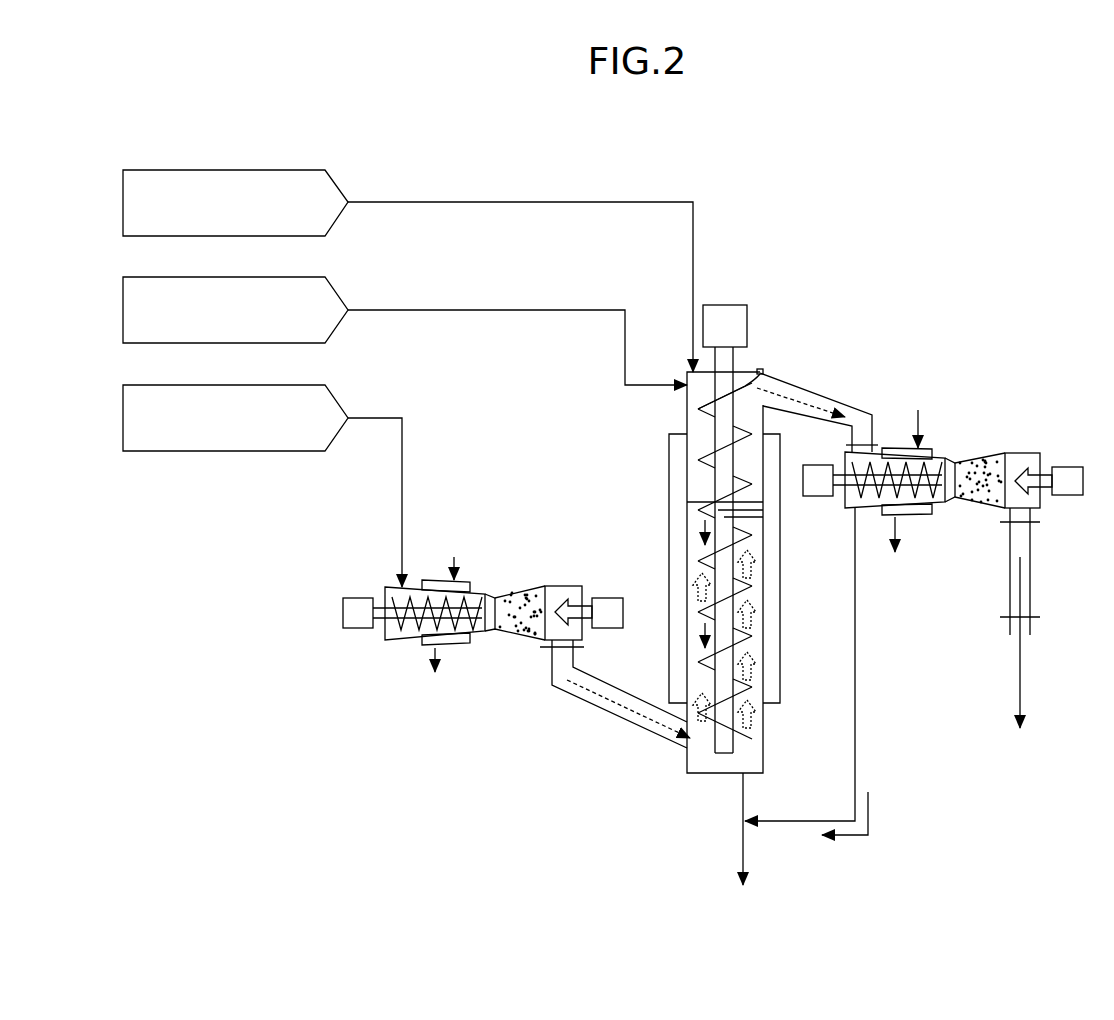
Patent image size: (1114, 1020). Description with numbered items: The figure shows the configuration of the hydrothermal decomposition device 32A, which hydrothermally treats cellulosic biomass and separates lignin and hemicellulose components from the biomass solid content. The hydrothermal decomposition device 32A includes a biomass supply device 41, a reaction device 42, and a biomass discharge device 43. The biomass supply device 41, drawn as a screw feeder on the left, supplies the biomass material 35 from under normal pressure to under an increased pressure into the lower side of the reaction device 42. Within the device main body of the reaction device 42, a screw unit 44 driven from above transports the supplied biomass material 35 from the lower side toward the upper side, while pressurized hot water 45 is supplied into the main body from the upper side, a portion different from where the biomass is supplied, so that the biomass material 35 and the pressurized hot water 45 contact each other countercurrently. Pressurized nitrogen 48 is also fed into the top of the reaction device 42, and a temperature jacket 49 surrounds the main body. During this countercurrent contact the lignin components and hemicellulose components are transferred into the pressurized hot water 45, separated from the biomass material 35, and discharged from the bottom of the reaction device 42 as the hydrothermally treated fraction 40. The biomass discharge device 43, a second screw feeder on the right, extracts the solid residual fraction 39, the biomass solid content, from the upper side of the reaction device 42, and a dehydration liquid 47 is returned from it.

The pressurized nitrogen 48 is at (284, 170).
The pressurized hot water 45 is at (284, 277).
The biomass material 35 is at (284, 385).
The hydrothermal decomposition device 32A is at (882, 271).
The reaction device 42 is at (687, 532).
The temperature jacket 49 is at (668, 448).
The screw unit 44 is at (757, 370).
The solid residual fraction 39 is at (815, 398).
The biomass discharge device 43 is at (1060, 442).
The biomass supply device 41 is at (366, 588).
The hydrothermally treated fraction 40 is at (742, 845).
The dehydration liquid 47 is at (838, 840).